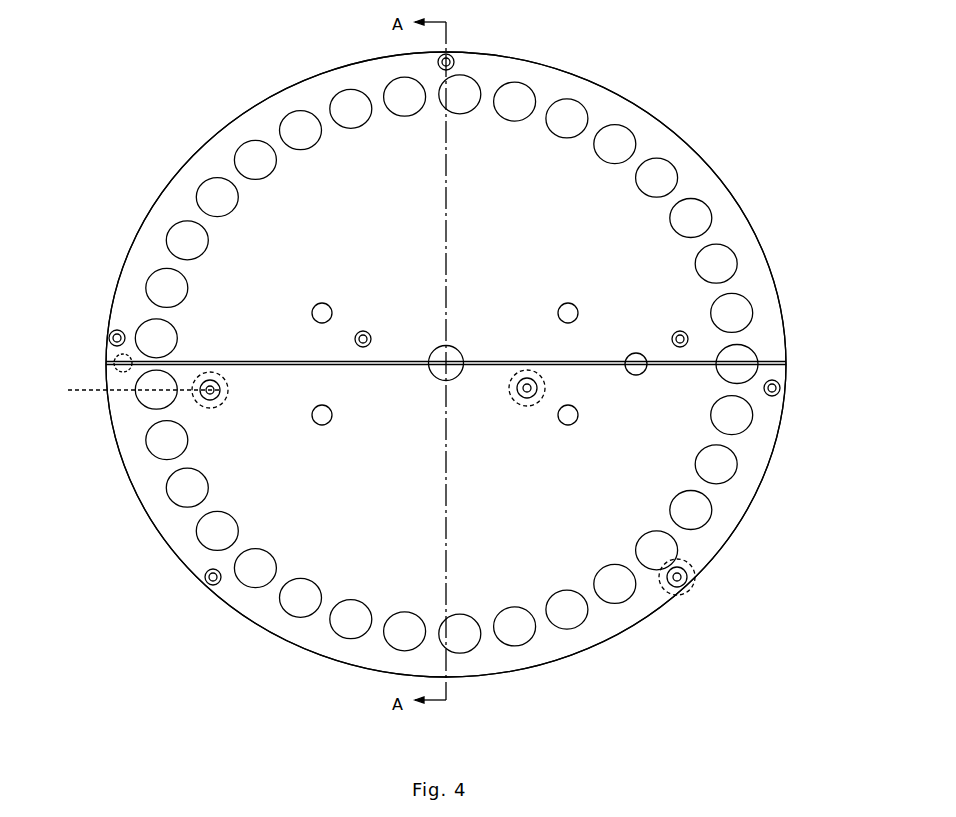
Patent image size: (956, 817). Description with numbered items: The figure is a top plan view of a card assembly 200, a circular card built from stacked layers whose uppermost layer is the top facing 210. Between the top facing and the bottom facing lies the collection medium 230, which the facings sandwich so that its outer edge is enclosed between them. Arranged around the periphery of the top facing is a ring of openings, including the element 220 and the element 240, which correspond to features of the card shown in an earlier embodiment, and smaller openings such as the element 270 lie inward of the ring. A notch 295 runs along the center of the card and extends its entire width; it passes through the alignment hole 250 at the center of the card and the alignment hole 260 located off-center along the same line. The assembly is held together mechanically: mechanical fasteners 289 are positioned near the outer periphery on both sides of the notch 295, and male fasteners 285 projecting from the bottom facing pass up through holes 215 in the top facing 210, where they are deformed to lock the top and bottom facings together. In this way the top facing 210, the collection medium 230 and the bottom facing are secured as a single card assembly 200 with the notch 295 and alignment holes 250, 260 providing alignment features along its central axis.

The card assembly 200 is at (253, 623).
The top facing 210 is at (655, 140).
The holes 215 is at (402, 376).
The element corresponding to element 120 220 is at (520, 84).
The collection medium 230 is at (692, 218).
The element corresponding to element 140 240 is at (753, 350).
The alignment hole 250 is at (434, 355).
The alignment hole 260 is at (641, 371).
The element corresponding to element 170 270 is at (315, 308).
The male fasteners 285 is at (123, 392).
The mechanical fasteners 289 is at (532, 406).
The notch 295 is at (118, 358).